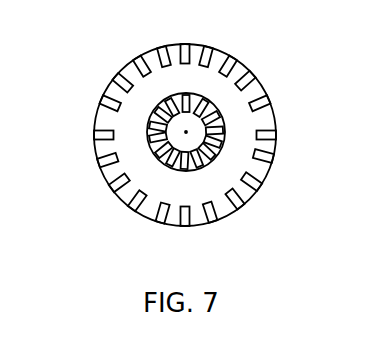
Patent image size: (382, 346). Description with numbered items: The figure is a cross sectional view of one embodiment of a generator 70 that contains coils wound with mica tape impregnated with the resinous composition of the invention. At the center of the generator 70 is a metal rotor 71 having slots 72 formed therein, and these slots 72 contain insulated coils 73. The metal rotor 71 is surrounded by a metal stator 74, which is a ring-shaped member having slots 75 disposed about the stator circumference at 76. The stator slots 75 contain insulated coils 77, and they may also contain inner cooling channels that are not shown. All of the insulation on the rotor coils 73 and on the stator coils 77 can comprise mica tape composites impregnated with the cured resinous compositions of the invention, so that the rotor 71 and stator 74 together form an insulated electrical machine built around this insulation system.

The generator 70 is at (184, 135).
The metal rotor 71 is at (193, 138).
The slots 72 is at (157, 104).
The insulated coils 73 is at (213, 172).
The metal stator 74 is at (242, 119).
The slots 75 is at (233, 75).
The stator circumference 76 is at (117, 87).
The insulated coils 77 is at (205, 44).